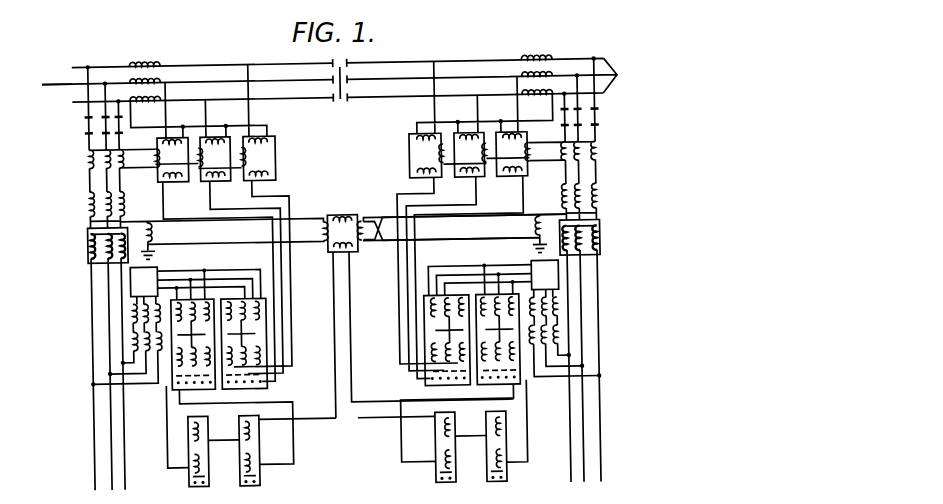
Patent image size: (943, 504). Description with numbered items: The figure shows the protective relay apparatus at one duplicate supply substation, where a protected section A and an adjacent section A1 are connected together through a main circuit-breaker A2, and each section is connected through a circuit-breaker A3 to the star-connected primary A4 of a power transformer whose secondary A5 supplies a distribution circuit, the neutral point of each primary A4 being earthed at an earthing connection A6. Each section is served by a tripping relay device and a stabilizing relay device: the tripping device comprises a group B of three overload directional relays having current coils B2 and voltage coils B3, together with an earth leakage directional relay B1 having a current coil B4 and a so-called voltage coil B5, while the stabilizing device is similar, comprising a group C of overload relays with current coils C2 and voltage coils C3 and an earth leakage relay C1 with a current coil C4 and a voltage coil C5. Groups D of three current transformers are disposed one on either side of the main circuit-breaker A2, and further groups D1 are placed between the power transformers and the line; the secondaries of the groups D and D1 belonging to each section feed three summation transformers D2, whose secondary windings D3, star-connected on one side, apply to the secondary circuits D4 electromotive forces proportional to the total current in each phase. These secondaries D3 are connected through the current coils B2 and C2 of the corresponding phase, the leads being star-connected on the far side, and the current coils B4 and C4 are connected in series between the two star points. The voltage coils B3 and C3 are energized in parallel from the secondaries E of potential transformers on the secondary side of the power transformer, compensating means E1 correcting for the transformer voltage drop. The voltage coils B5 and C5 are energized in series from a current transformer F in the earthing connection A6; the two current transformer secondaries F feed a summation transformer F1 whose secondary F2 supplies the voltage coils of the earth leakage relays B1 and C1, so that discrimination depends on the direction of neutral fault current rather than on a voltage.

The section A is at (337, 80).
The adjacent section A1 is at (72, 97).
The main circuit-breaker A2 is at (339, 102).
The circuit-breaker A3 is at (611, 128).
The power transformer primary A4 is at (612, 192).
The power transformer secondary A5 is at (612, 233).
The earthing connection A6 is at (530, 253).
The group of overload directional relays B is at (505, 385).
The earth leakage directional relay B1 is at (495, 448).
The current coils B2 is at (510, 364).
The voltage coils B3 is at (508, 300).
The current coil B4 is at (495, 462).
The voltage coil B5 is at (495, 426).
The group of overload directional relays C is at (420, 375).
The earth leakage directional relay C1 is at (440, 448).
The current coils C2 is at (424, 360).
The voltage coils C3 is at (458, 300).
The current coil C4 is at (440, 462).
The voltage coil C5 is at (440, 428).
The group of current transformers D is at (530, 63).
The group of current transformers D1 is at (612, 157).
The summation transformers D2 is at (496, 137).
The summation transformer secondary windings D3 is at (435, 182).
The secondary circuits D4 is at (395, 260).
The potential transformer secondaries E is at (606, 308).
The compensating means E1 is at (606, 272).
The current transformer F is at (537, 219).
The summation transformer F1 is at (338, 222).
The summation transformer secondary F2 is at (350, 252).